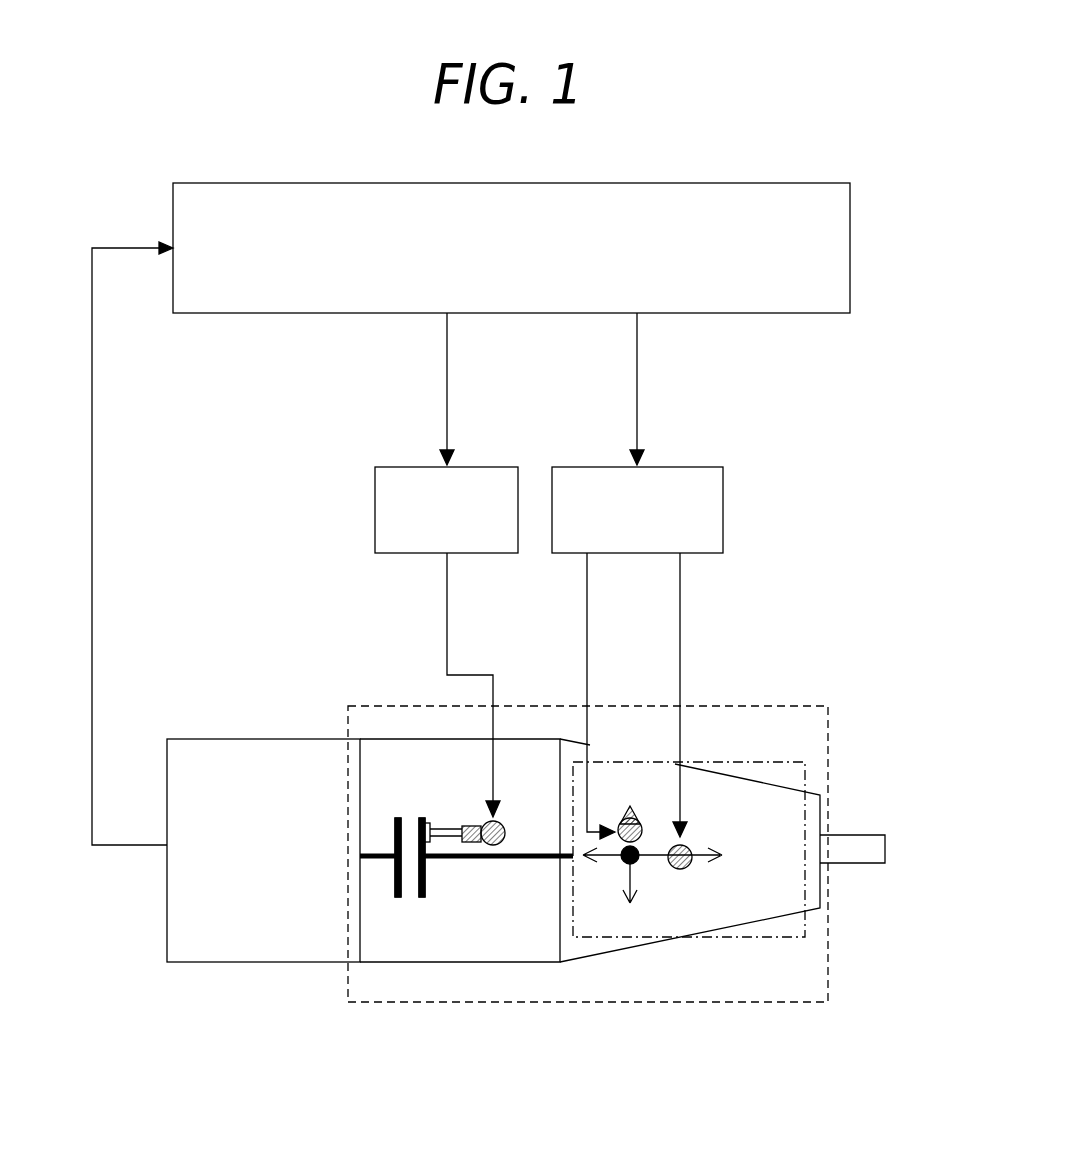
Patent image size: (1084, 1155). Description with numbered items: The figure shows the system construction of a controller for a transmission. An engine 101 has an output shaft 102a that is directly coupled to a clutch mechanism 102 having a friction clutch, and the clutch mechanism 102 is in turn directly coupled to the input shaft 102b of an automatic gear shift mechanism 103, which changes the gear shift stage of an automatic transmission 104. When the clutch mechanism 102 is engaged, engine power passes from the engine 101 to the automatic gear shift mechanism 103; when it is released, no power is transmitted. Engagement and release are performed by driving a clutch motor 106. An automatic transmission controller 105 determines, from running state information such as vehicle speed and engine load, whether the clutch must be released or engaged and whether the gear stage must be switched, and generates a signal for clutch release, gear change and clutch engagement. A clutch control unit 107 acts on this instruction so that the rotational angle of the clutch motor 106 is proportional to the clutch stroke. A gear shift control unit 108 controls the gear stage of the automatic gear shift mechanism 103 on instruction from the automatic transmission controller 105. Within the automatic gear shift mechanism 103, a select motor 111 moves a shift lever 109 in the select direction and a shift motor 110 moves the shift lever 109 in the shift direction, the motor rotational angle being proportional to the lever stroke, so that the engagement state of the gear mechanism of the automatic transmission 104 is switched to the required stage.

The engine 101 is at (228, 739).
The clutch mechanism 102 is at (400, 898).
The output shaft 102a is at (363, 860).
The input shaft 102b is at (472, 862).
The automatic gear shift mechanism 103 is at (777, 783).
The automatic transmission 104 is at (762, 1002).
The automatic transmission controller 105 is at (233, 182).
The clutch motor 106 is at (480, 817).
The clutch control unit 107 is at (400, 467).
The gear shift control unit 108 is at (582, 467).
The shift lever 109 is at (622, 850).
The shift motor 110 is at (622, 862).
The select motor 111 is at (676, 870).